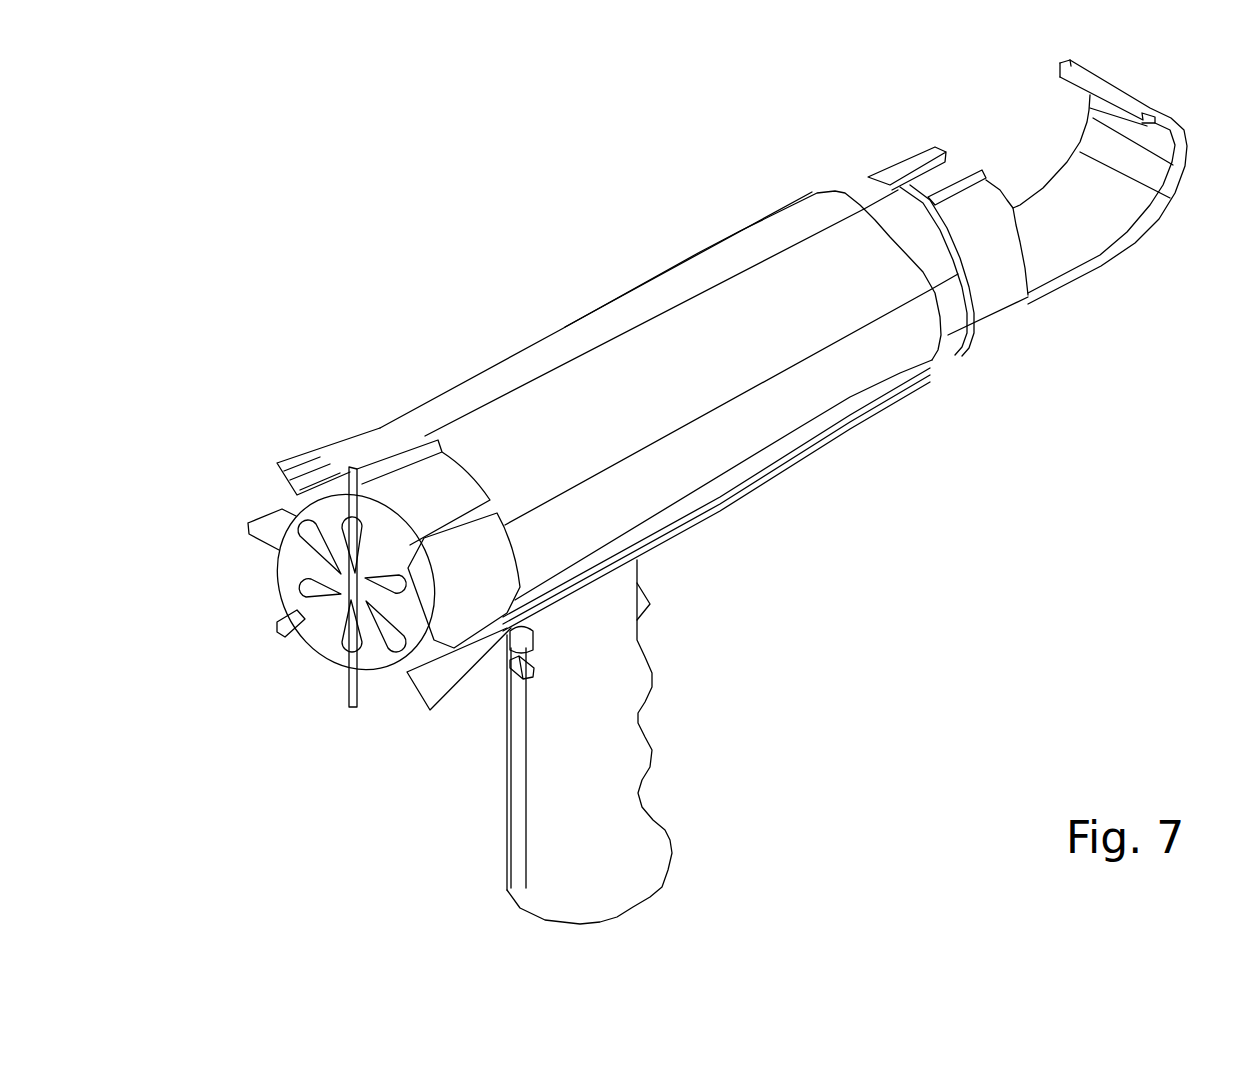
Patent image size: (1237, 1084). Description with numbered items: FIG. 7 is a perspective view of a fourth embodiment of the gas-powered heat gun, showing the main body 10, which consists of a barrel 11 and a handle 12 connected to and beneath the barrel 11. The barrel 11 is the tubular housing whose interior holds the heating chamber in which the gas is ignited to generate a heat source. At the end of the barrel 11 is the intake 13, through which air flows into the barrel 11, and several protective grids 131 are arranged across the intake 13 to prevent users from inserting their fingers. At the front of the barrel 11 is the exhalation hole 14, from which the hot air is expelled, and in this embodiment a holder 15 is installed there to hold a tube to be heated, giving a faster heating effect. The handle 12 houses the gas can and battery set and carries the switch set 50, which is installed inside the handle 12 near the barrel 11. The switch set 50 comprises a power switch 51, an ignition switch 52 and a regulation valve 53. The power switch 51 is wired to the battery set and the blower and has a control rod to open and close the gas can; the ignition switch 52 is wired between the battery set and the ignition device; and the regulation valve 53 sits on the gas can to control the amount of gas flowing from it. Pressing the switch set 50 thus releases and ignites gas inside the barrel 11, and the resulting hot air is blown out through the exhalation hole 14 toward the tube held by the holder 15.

The main body 10 is at (783, 588).
The barrel 11 is at (531, 362).
The handle 12 is at (660, 850).
The intake 13 is at (294, 516).
The protective grids 131 is at (342, 606).
The exhalation hole 14 is at (960, 178).
The holder 15 is at (1000, 299).
The switch set 50 is at (438, 712).
The power switch 51 is at (519, 641).
The ignition switch 52 is at (647, 603).
The regulation valve 53 is at (522, 674).